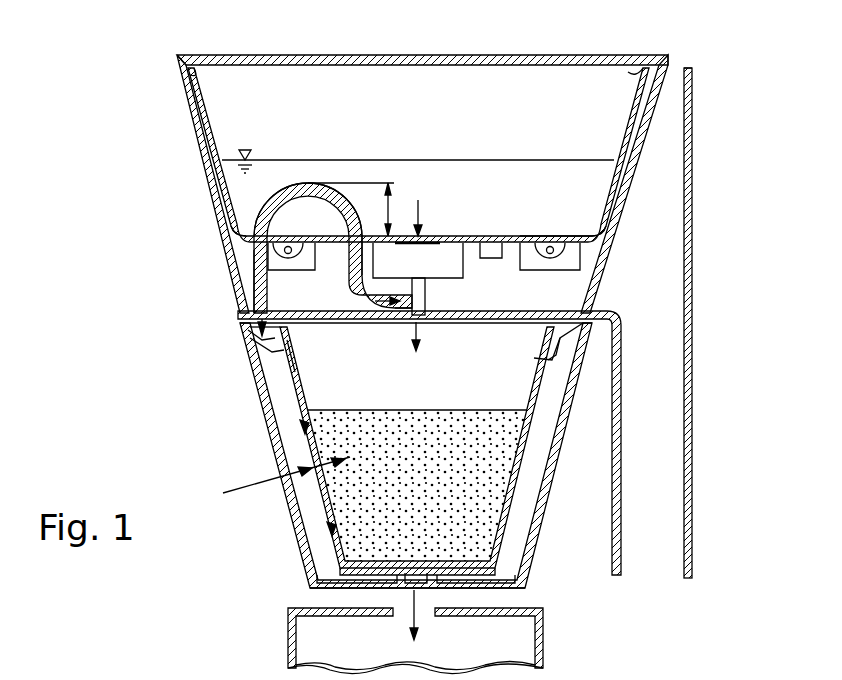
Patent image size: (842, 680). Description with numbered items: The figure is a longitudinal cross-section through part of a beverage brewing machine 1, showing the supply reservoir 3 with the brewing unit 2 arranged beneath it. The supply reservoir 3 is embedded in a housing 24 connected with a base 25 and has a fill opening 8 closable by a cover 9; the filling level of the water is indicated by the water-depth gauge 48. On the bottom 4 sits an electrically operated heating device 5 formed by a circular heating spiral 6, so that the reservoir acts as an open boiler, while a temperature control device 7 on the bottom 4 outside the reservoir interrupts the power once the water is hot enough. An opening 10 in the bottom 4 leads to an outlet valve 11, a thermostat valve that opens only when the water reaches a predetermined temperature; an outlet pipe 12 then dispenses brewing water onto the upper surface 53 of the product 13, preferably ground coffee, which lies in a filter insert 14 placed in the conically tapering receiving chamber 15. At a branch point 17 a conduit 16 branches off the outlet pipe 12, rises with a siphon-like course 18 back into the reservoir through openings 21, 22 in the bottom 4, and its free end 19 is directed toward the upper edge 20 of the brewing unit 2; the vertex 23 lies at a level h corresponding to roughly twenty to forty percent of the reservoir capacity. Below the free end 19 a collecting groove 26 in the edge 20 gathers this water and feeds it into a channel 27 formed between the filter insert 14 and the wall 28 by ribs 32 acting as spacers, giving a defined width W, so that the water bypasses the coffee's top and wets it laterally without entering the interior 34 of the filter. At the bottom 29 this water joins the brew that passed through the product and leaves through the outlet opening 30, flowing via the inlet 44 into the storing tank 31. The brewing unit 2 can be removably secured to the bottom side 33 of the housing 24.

The beverage brewing machine 1 is at (705, 350).
The brewing unit 2 is at (600, 418).
The supply reservoir 3 is at (635, 120).
The bottom 4 is at (583, 222).
The heating device 5 is at (597, 251).
The heating spiral 6 is at (554, 260).
The temperature control device 7 is at (495, 245).
The fill opening 8 is at (632, 62).
The cover 9 is at (245, 62).
The opening 10 is at (425, 237).
The outlet valve 11 is at (445, 242).
The outlet pipe 12 is at (430, 297).
The product 13 is at (490, 458).
The filter insert 14 is at (572, 364).
The receiving chamber 15 is at (308, 398).
The conduit 16 is at (345, 275).
The branch point 17 is at (403, 308).
The siphon-like course 18 is at (322, 178).
The free end 19 is at (258, 300).
The upper edge 20 is at (240, 322).
The opening 21 is at (382, 195).
The opening 22 is at (232, 215).
The vertex 23 is at (305, 183).
The housing 24 is at (665, 93).
The base 25 is at (695, 545).
The collecting groove 26 is at (255, 345).
The channel 27 is at (325, 500).
The wall 28 is at (572, 393).
The bottom 29 is at (365, 582).
The outlet opening 30 is at (410, 595).
The storing tank 31 is at (545, 637).
The ribs 32 is at (505, 488).
The bottom side 33 is at (455, 319).
The interior 34 is at (335, 372).
The inlet 44 is at (428, 612).
The water-depth gauge 48 is at (266, 158).
The upper surface 53 is at (395, 410).
The width W is at (248, 491).
The level h is at (358, 209).